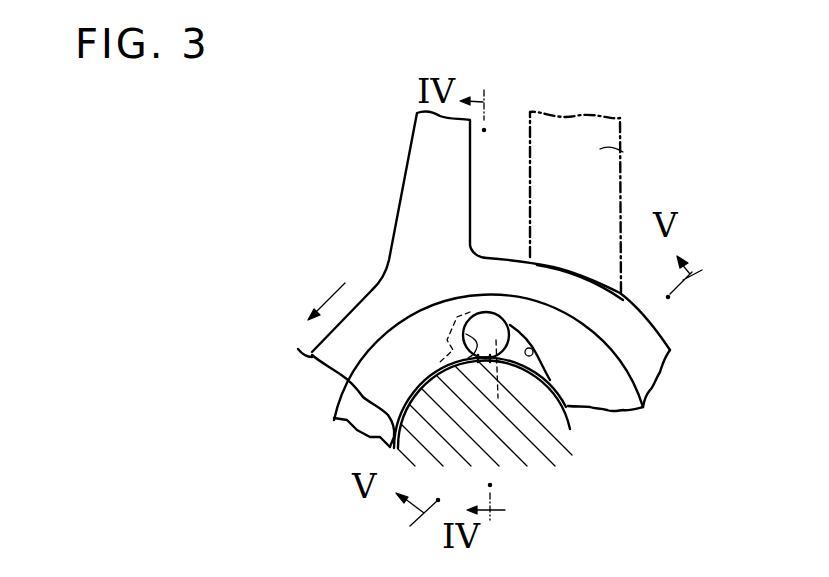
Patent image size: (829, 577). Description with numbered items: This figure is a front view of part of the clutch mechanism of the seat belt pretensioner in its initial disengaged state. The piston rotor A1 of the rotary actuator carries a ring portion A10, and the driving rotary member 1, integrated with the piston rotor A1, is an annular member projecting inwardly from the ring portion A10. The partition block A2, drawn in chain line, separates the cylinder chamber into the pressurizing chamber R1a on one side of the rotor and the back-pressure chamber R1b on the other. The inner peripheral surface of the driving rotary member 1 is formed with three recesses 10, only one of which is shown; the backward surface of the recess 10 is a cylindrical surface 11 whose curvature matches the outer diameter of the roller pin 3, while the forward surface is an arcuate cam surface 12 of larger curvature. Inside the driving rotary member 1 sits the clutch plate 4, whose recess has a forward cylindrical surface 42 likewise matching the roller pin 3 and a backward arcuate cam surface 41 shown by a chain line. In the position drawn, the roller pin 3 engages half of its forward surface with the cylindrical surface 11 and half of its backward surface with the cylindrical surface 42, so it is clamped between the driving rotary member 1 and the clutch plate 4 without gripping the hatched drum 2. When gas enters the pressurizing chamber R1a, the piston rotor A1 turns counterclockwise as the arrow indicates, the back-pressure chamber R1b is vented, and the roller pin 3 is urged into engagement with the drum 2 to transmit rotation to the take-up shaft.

The driving rotary member 1 is at (631, 398).
The drum 2 is at (576, 438).
The roller pin 3 is at (483, 312).
The clutch plate 4 is at (352, 405).
The recess 10 is at (523, 337).
The cylindrical surface 11 is at (466, 389).
The arcuate cam surface 12 is at (548, 343).
The arcuate cam surface 41 is at (437, 362).
The cylindrical surface 42 is at (498, 383).
The piston rotor A1 is at (395, 182).
The partition block A2 is at (630, 151).
The ring portion A10 is at (656, 341).
The pressurizing chamber R1a is at (520, 195).
The back-pressure chamber R1b is at (372, 228).